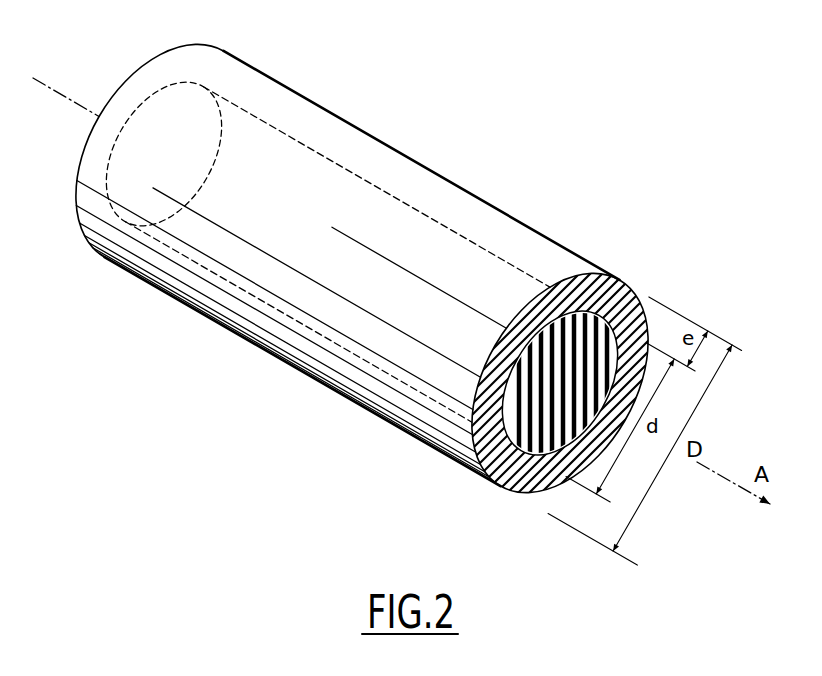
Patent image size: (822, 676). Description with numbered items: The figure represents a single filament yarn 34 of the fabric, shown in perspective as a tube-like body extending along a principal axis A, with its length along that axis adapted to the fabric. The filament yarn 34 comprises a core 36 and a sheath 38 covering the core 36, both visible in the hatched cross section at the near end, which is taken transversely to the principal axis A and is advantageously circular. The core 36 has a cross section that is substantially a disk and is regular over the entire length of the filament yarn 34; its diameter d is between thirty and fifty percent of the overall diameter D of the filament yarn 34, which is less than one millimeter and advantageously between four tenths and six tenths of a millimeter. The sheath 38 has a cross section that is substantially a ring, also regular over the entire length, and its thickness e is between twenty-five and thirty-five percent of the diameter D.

The filament yarn 34 is at (405, 113).
The core 36 is at (571, 290).
The sheath 38 is at (613, 274).